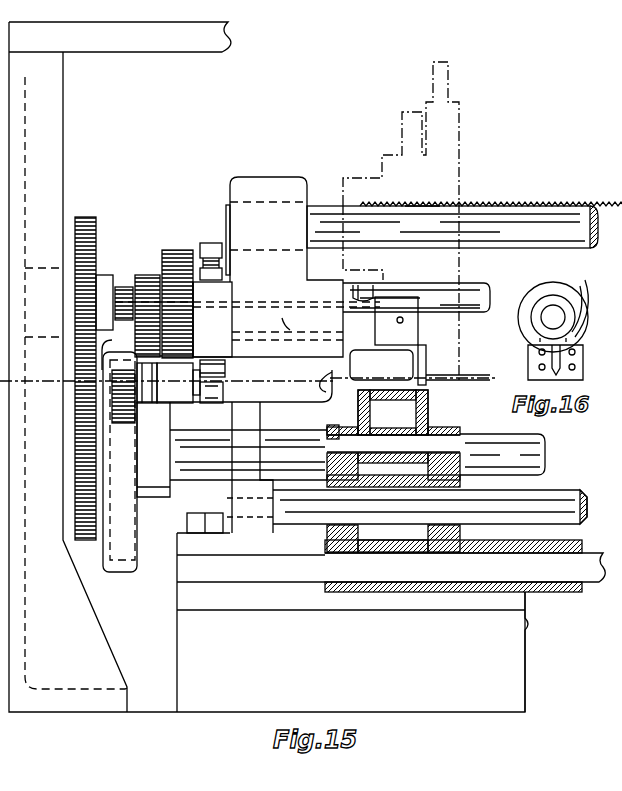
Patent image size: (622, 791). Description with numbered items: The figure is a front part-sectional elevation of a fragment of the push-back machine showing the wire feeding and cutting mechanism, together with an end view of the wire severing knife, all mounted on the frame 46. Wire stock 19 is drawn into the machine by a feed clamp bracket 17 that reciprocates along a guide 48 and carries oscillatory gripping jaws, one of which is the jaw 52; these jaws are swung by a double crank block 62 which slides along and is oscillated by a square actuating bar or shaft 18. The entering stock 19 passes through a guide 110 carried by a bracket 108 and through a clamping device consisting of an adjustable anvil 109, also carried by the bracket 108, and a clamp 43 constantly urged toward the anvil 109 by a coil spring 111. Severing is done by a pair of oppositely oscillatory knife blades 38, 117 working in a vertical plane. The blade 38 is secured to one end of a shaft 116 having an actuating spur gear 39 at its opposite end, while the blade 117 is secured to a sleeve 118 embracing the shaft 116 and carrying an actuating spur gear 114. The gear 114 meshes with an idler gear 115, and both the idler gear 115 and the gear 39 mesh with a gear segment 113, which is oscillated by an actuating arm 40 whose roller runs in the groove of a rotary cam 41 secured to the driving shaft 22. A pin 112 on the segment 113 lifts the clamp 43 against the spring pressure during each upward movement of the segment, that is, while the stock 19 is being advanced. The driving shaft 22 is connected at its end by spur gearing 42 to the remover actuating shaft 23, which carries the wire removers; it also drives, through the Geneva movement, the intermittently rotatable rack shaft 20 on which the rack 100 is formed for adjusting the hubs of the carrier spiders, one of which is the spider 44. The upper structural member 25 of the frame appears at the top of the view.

In FIG. 15, the feed clamp bracket 17 is at (326, 426).
In FIG. 15, the square actuating bar or shaft 18 is at (553, 498).
In FIG. 15, the wire stock 19 is at (457, 388).
In FIG. 15, the rack shaft 20 is at (560, 196).
In FIG. 15, the driving shaft 22 is at (200, 470).
In FIG. 15, the remover actuating shaft 23 is at (468, 294).
In FIG. 15, the frame top bar 25 is at (155, 40).
In FIG. 15, the knife blade 38 is at (430, 364).
In FIG. 16, the knife blade 38 is at (572, 300).
In FIG. 15, the actuating spur gear 39 is at (128, 338).
In FIG. 15, the actuating arm 40 is at (156, 497).
In FIG. 15, the rotary cam 41 is at (118, 564).
In FIG. 15, the spur gearing 42 is at (84, 217).
In FIG. 15, the clamp 43 is at (226, 368).
In FIG. 15, the rotary carrier or spider 44 is at (447, 80).
In FIG. 15, the frame 46 is at (240, 700).
In FIG. 15, the guide 48 is at (465, 566).
In FIG. 15, the gripping jaw 52 is at (376, 398).
In FIG. 15, the double crank block 62 is at (375, 482).
In FIG. 15, the rack 100 is at (422, 195).
In FIG. 15, the bracket 108 is at (208, 535).
In FIG. 15, the adjustable anvil 109 is at (222, 392).
In FIG. 15, the guide 110 is at (310, 374).
In FIG. 15, the coil spring 111 is at (226, 360).
In FIG. 15, the pin 112 is at (165, 383).
In FIG. 15, the gear segment 113 is at (122, 262).
In FIG. 15, the actuating spur gear 114 is at (195, 320).
In FIG. 15, the idler gear 115 is at (176, 262).
In FIG. 15, the shaft 116 is at (292, 308).
In FIG. 16, the shaft 116 is at (550, 318).
In FIG. 15, the knife blade 117 is at (381, 365).
In FIG. 16, the knife blade 117 is at (531, 353).
In FIG. 15, the sleeve 118 is at (304, 336).
In FIG. 16, the sleeve 118 is at (543, 308).